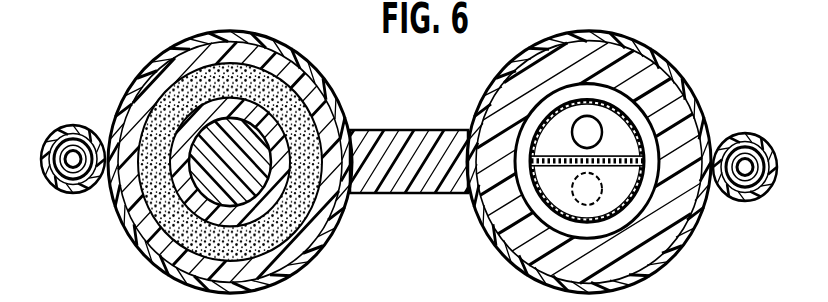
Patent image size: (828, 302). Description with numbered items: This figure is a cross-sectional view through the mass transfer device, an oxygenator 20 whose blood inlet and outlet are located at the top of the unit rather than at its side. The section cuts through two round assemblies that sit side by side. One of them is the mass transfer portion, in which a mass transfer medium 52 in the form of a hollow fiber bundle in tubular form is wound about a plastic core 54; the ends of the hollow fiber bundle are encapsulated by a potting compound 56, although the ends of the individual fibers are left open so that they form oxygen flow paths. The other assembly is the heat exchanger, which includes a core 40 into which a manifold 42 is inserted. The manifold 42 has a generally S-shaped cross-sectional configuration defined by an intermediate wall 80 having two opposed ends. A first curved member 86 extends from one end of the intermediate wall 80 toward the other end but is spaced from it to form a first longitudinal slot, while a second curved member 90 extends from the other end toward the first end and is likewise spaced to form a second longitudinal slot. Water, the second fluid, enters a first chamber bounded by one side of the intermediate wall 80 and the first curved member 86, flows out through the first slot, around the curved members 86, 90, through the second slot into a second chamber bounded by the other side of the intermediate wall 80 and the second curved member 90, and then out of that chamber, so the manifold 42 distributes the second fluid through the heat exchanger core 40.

The oxygenator 20 is at (427, 194).
The core 40 is at (648, 177).
The manifold 42 is at (617, 160).
The mass transfer medium 52 is at (328, 122).
The plastic core 54 is at (312, 88).
The potting compound 56 is at (127, 103).
The intermediate wall 80 is at (556, 157).
The first curved member 86 is at (593, 218).
The second curved member 90 is at (607, 112).